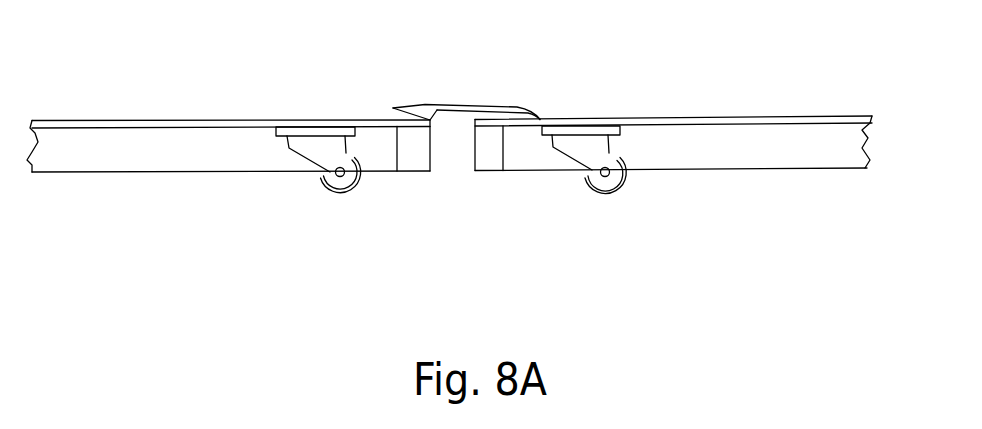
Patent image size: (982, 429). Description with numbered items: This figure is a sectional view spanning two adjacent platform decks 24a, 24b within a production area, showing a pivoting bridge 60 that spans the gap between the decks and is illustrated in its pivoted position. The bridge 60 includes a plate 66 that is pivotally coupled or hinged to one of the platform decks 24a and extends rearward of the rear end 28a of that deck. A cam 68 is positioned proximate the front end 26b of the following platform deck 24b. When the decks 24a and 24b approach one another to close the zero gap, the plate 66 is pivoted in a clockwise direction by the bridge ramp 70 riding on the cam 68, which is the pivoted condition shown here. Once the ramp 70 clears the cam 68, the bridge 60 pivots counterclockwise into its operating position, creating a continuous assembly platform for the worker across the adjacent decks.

The platform deck 24a is at (762, 155).
The following platform deck 24b is at (133, 163).
The front end of the following platform deck 26b is at (428, 158).
The rear end of the platform deck 28a is at (475, 158).
The bridge 60 is at (466, 65).
The plate 66 is at (480, 107).
The cam 68 is at (413, 163).
The bridge ramp 70 is at (412, 103).